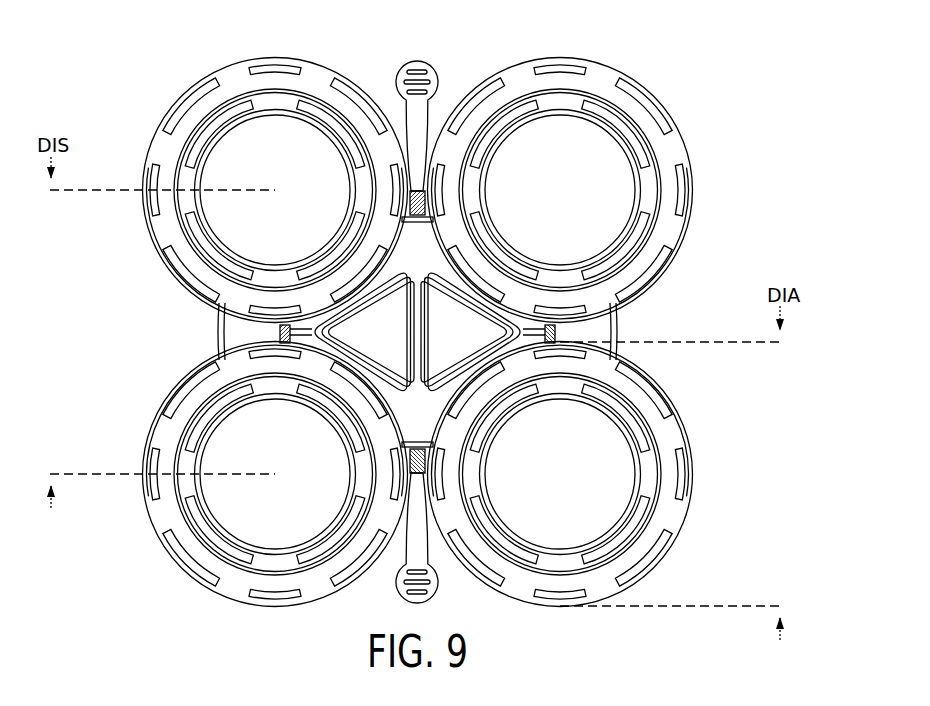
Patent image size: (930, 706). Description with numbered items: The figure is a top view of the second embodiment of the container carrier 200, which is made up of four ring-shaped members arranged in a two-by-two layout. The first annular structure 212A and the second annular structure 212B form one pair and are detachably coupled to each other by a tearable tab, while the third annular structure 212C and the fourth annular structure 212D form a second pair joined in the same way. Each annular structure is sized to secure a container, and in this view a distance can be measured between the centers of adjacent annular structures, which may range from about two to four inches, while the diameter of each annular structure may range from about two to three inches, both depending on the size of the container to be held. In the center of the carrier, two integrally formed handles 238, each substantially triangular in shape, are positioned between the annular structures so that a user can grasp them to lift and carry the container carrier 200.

The container carrier 200 is at (741, 49).
The first annular structure 212A is at (240, 614).
The second annular structure 212B is at (581, 614).
The third annular structure 212C is at (240, 51).
The fourth annular structure 212D is at (578, 51).
The handle 238 is at (400, 350).